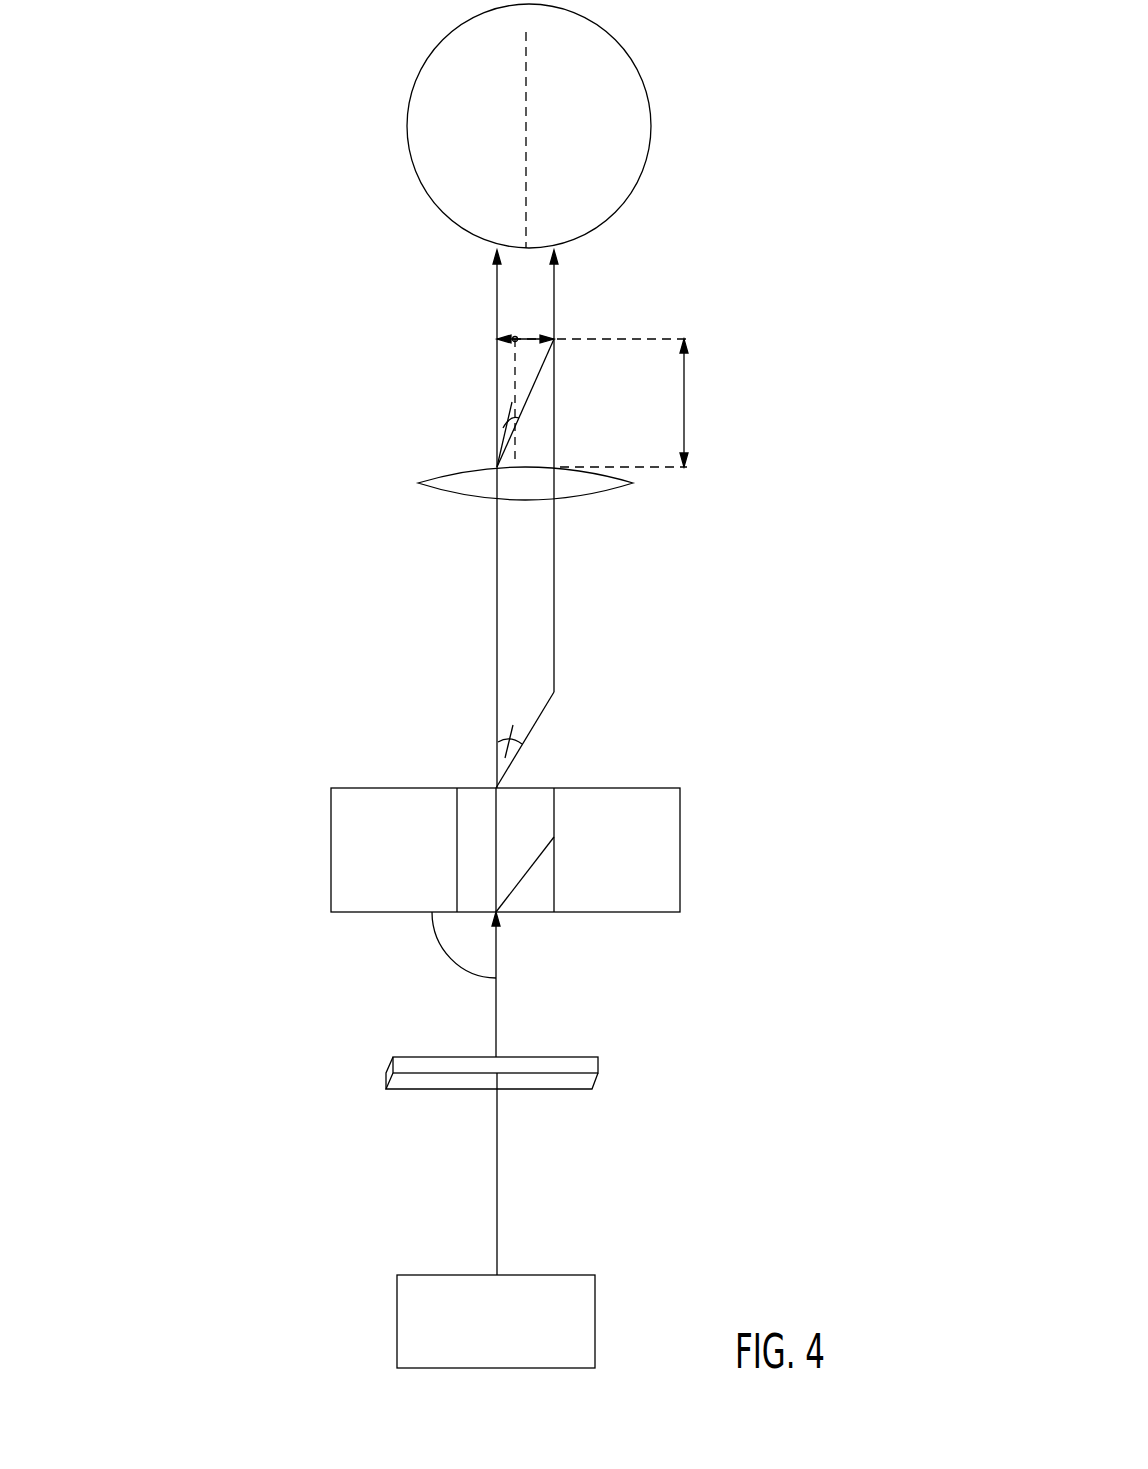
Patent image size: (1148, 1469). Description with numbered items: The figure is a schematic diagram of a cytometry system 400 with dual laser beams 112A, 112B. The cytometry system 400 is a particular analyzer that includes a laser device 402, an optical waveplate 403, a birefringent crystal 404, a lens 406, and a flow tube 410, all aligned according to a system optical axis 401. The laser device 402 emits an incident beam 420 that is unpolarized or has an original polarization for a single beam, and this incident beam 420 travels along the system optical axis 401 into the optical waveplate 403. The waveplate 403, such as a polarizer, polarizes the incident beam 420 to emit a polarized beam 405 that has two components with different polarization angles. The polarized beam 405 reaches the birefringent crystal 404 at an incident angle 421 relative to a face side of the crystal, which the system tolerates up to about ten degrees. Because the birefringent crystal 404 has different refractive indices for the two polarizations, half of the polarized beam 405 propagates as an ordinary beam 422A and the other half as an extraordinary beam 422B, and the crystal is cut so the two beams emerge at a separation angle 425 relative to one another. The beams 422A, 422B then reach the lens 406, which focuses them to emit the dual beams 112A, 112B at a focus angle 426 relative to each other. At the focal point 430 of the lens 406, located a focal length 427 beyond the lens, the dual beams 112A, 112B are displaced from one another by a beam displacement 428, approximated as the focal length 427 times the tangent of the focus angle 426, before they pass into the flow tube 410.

The cytometry system 400 is at (243, 1192).
The system optical axis 401 is at (526, 95).
The laser device 402 is at (595, 1345).
The optical waveplate 403 is at (408, 1092).
The birefringent crystal 404 is at (672, 788).
The polarized beam 405 is at (497, 947).
The lens 406 is at (605, 491).
The flow tube 410 is at (407, 128).
The dual laser beam 112A is at (497, 381).
The dual laser beam 112B is at (557, 381).
The incident beam 420 is at (497, 1177).
The incident angle 421 is at (448, 958).
The ordinary beam 422A is at (497, 652).
The extraordinary beam 422B is at (557, 648).
The separation angle 425 is at (498, 742).
The focus angle 426 is at (500, 415).
The focal length 427 is at (687, 402).
The beam displacement 428 is at (533, 339).
The focal point 430 is at (515, 336).